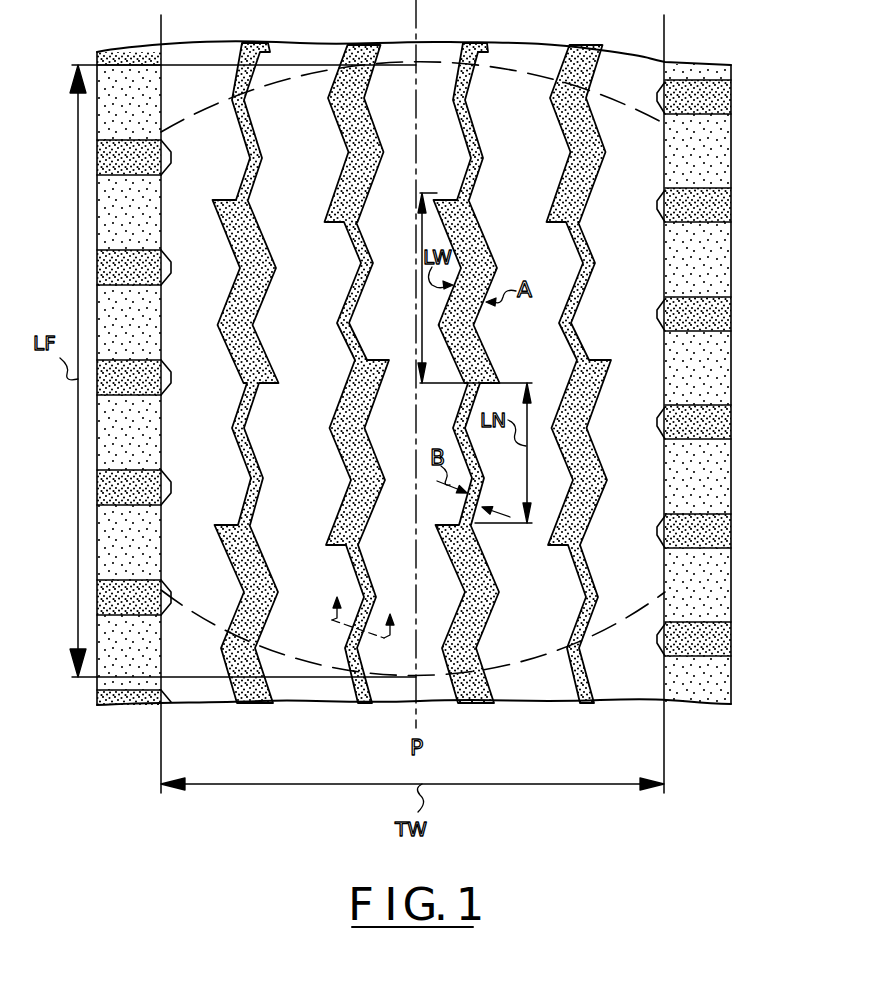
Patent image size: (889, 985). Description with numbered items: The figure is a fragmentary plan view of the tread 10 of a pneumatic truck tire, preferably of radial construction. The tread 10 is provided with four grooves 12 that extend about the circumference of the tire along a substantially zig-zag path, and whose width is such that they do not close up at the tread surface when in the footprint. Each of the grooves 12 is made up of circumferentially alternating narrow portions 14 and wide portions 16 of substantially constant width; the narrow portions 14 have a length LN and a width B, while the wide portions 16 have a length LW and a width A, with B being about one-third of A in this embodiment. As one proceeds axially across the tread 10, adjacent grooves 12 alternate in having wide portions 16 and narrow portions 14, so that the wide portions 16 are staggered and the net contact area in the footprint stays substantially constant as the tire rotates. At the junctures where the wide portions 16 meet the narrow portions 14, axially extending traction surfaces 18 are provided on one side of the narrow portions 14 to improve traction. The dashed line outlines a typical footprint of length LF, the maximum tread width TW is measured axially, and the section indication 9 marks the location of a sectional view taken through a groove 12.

The tread 10 is at (655, 581).
The grooves 12 is at (352, 398).
The narrow portion 14 is at (370, 264).
The wide portions 16 is at (243, 315).
The traction surfaces 18 is at (346, 211).
The section line 9- 9 is at (365, 606).